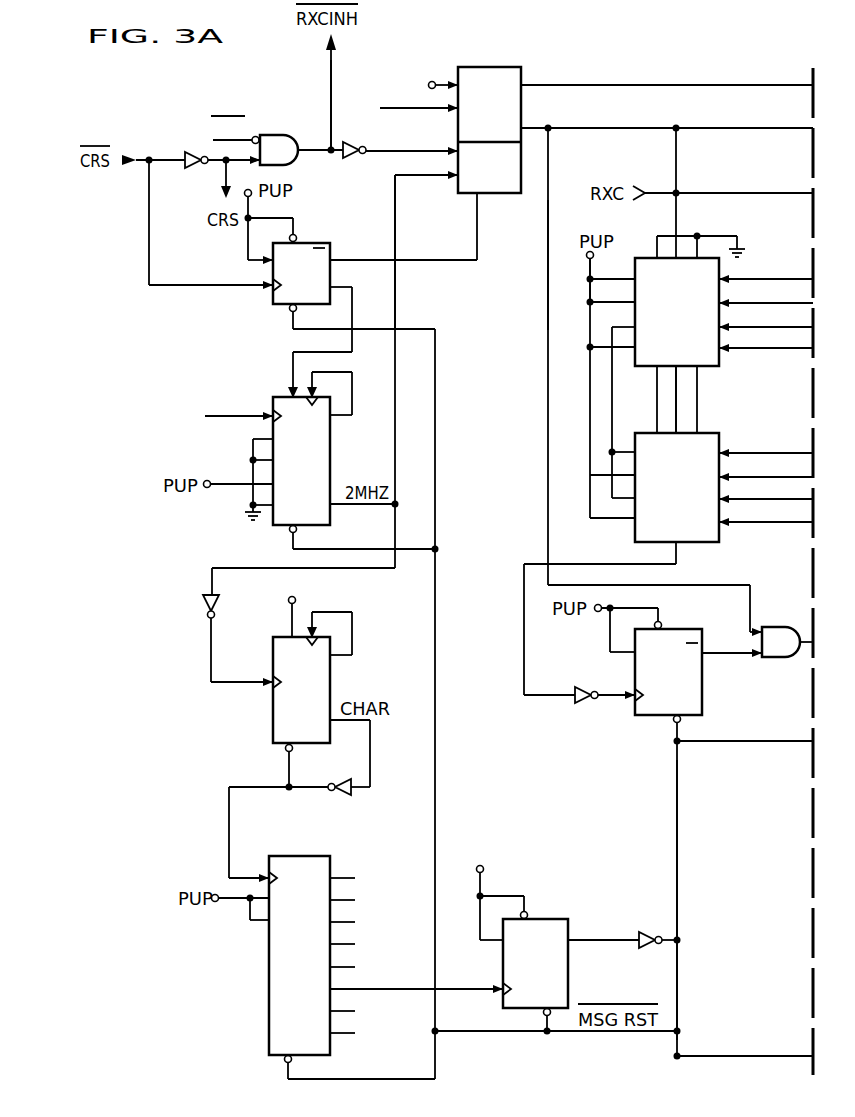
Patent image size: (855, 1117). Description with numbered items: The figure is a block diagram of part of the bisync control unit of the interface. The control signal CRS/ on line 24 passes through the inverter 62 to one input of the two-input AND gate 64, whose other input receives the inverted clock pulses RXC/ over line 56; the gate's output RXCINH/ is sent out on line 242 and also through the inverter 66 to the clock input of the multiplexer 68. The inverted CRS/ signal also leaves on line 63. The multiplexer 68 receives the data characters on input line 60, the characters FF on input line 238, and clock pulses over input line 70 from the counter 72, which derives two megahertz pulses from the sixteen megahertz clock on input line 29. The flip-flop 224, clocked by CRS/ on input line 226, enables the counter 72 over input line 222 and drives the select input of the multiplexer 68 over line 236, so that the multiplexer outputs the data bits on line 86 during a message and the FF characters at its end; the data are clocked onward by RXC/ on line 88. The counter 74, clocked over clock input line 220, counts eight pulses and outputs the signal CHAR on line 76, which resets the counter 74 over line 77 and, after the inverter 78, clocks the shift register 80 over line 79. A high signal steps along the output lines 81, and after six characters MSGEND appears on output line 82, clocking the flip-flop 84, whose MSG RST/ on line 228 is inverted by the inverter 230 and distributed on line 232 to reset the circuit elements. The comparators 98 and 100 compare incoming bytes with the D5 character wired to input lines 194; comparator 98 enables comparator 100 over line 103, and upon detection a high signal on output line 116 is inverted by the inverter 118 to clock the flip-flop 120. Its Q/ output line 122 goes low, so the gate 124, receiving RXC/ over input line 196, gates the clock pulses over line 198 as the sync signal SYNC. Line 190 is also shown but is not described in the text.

The line 24 is at (133, 158).
The input line 29 is at (212, 415).
The line 56 is at (252, 136).
The input line 60 is at (420, 110).
The inverter 62 is at (190, 168).
The line 63 is at (226, 178).
The AND gate 64 is at (288, 138).
The inverter 66 is at (346, 160).
The multiplexer 68 is at (503, 67).
The input line 70 is at (395, 234).
The counter 72 is at (330, 455).
The counter 74 is at (330, 681).
The line 76 is at (370, 757).
The line 77 is at (289, 765).
The inverter 78 is at (341, 795).
The line 79 is at (229, 815).
The shift register 80 is at (290, 856).
The output lines 81 is at (340, 878).
The output line 82 is at (396, 990).
The flip-flop 84 is at (540, 919).
The line 86 is at (627, 87).
The line 88 is at (733, 130).
The comparator 98 is at (706, 366).
The comparator 100 is at (710, 542).
The line 103 is at (676, 418).
The output line 116 is at (576, 568).
The inverter 118 is at (583, 684).
The flip-flop 120 is at (700, 699).
The Q/ output line 122 is at (728, 655).
The AND gate 124 is at (776, 627).
The multiplexer input line 190 is at (400, 151).
The input lines 194 is at (606, 260).
The input line 196 is at (548, 268).
The line 198 is at (808, 644).
The clock input line 220 is at (209, 633).
The input line 222 is at (293, 352).
The flip-flop 224 is at (312, 222).
The input line 226 is at (170, 285).
The line 228 is at (580, 940).
The inverter 230 is at (663, 948).
The line 232 is at (740, 742).
The line 236 is at (430, 261).
The input line 238 is at (441, 84).
The line 242 is at (335, 73).